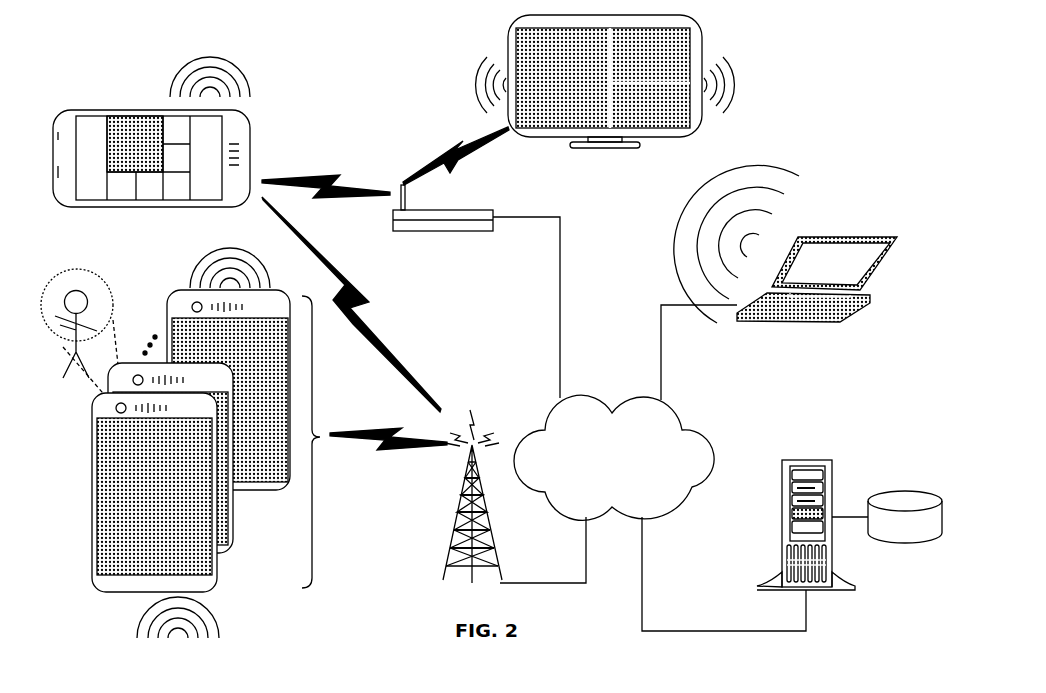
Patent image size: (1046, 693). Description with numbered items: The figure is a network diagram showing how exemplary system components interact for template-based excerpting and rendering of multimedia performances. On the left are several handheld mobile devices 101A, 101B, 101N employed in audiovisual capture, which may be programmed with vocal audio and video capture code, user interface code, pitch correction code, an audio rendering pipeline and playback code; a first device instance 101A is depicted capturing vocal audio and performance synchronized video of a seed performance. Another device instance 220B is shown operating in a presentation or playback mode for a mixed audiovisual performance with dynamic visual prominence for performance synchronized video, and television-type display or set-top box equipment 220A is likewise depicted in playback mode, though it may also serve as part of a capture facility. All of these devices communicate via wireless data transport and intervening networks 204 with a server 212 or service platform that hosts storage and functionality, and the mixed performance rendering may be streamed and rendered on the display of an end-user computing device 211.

The device instance 220B is at (85, 110).
The television-type display and/or set-top box equipment 220A is at (503, 44).
The mobile device employed in audiovisual capture 101N is at (168, 294).
The mobile device employed in audiovisual capture 101B is at (233, 530).
The mobile device employed in audiovisual capture 101A is at (215, 585).
The networks 204 is at (670, 467).
The end-user computing device 211 is at (771, 321).
The server 212 is at (822, 460).